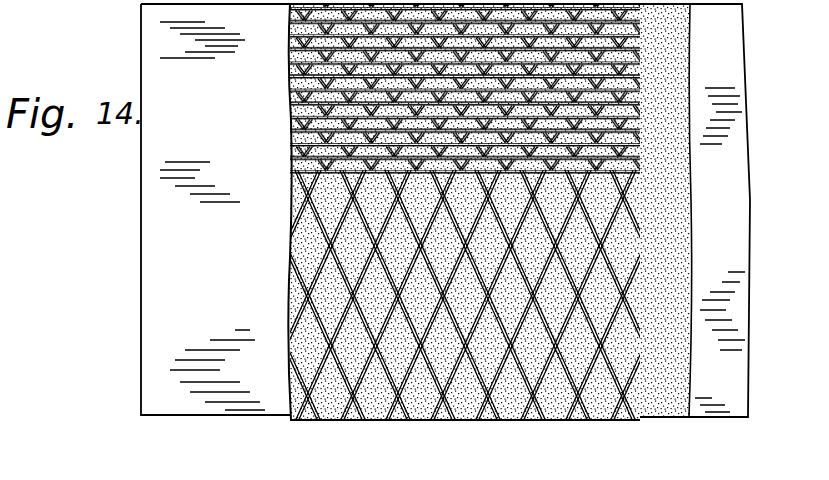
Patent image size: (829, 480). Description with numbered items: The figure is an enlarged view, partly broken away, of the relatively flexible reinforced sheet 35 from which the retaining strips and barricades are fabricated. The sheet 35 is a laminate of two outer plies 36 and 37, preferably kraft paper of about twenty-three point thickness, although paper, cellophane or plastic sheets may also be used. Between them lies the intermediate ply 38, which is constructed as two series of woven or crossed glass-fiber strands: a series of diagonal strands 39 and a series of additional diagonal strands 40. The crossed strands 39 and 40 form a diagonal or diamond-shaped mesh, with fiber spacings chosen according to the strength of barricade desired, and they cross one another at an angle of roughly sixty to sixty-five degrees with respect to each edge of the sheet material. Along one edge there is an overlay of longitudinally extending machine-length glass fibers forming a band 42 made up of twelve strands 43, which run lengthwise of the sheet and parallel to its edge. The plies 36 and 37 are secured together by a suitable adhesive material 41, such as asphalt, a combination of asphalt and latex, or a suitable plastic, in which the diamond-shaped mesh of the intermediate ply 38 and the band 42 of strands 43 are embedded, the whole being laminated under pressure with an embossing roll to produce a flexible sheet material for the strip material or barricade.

The sheet 35 is at (258, 428).
The ply 36 is at (153, 247).
The ply 37 is at (755, 380).
The intermediate ply 38 is at (550, 383).
The diagonal strands 39 is at (350, 421).
The additional diagonal strands 40 is at (527, 418).
The adhesive material 41 is at (672, 266).
The band 42 is at (290, 69).
The strands 43 is at (641, 58).